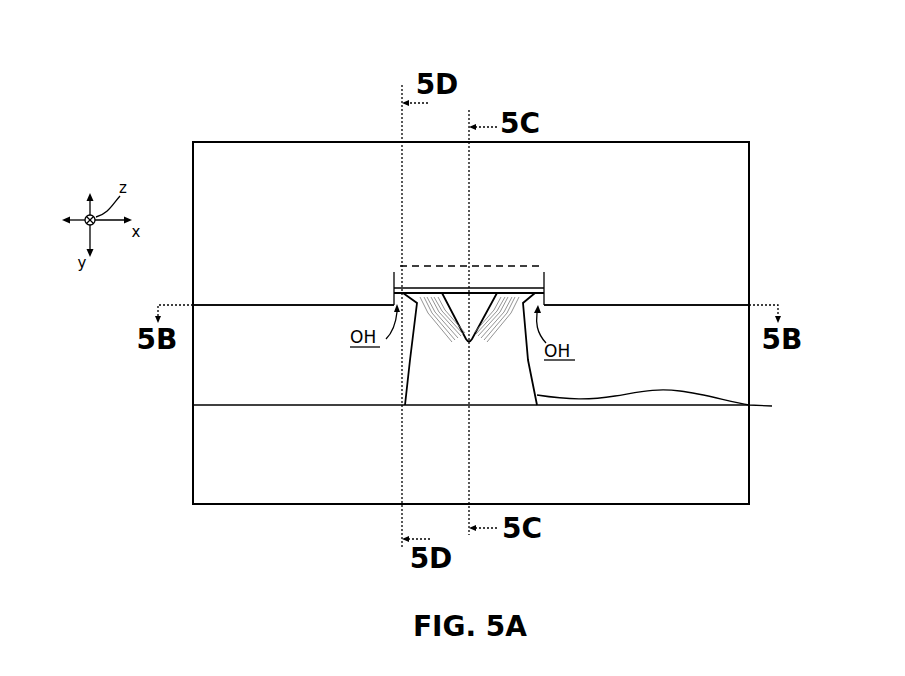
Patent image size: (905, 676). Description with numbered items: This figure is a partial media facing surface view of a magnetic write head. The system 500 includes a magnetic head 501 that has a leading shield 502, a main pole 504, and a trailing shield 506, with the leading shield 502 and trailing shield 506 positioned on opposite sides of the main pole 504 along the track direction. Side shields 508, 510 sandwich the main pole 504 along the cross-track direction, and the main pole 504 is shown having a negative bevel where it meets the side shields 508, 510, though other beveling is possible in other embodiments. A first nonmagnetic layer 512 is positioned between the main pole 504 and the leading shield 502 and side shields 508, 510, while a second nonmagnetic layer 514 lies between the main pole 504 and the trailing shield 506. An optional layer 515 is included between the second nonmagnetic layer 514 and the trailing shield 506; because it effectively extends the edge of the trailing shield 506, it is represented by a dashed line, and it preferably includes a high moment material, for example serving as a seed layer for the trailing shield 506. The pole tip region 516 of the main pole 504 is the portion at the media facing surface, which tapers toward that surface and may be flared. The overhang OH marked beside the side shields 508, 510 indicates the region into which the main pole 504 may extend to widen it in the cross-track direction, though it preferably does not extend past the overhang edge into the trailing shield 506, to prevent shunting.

The system 500 is at (129, 119).
The magnetic head 501 is at (121, 376).
The leading shield 502 is at (533, 468).
The main pole 504 is at (445, 332).
The trailing shield 506 is at (533, 221).
The side shield 508 is at (308, 366).
The side shield 510 is at (656, 367).
The first nonmagnetic layer 512 is at (673, 402).
The second nonmagnetic layer 514 is at (545, 291).
The optional layer 515 is at (545, 274).
The pole tip region 516 is at (467, 341).